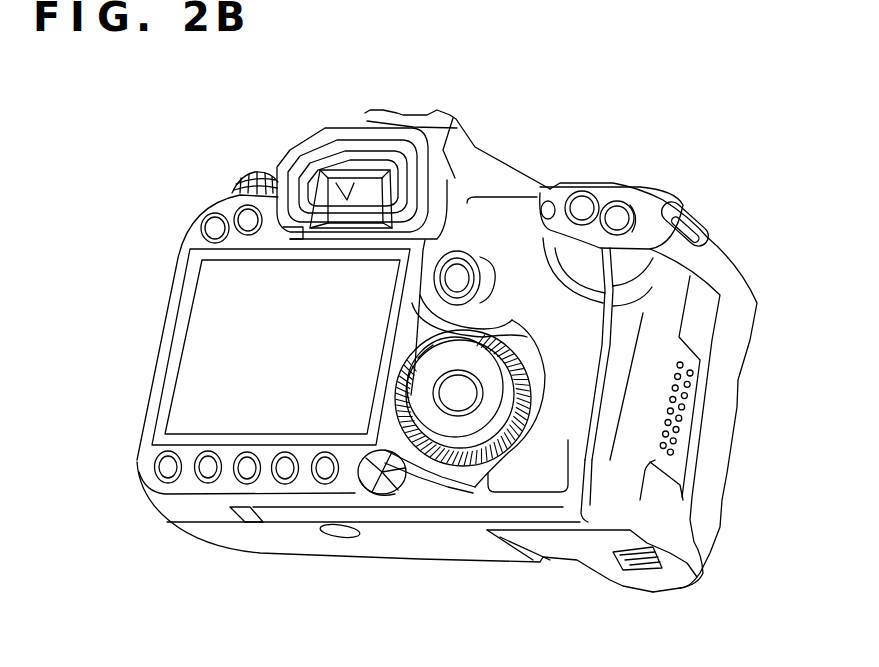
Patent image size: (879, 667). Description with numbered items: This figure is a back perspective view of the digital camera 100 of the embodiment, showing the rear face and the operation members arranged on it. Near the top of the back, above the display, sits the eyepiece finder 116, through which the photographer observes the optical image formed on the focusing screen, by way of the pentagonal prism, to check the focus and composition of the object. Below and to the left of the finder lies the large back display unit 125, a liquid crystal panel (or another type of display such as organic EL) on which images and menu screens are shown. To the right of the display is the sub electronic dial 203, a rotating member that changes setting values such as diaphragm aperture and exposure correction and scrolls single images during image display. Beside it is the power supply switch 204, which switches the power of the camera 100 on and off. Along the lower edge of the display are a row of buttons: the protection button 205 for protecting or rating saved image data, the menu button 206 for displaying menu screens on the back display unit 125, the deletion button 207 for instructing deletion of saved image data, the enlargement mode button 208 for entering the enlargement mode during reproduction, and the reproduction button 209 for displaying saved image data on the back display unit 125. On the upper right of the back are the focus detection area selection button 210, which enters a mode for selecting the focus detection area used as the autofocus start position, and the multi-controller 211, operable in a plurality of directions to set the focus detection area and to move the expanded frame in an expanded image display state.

The camera 100 is at (738, 166).
The eyepiece finder 116 is at (357, 200).
The back display unit 125 is at (227, 298).
The sub electronic dial 203 is at (472, 470).
The power supply switch 204 is at (386, 494).
The protection button 205 is at (322, 482).
The menu button 206 is at (282, 482).
The deletion button 207 is at (243, 480).
The enlargement mode button 208 is at (205, 480).
The reproduction button 209 is at (165, 480).
The focus detection area selection button 210 is at (612, 218).
The multi-controller 211 is at (453, 265).